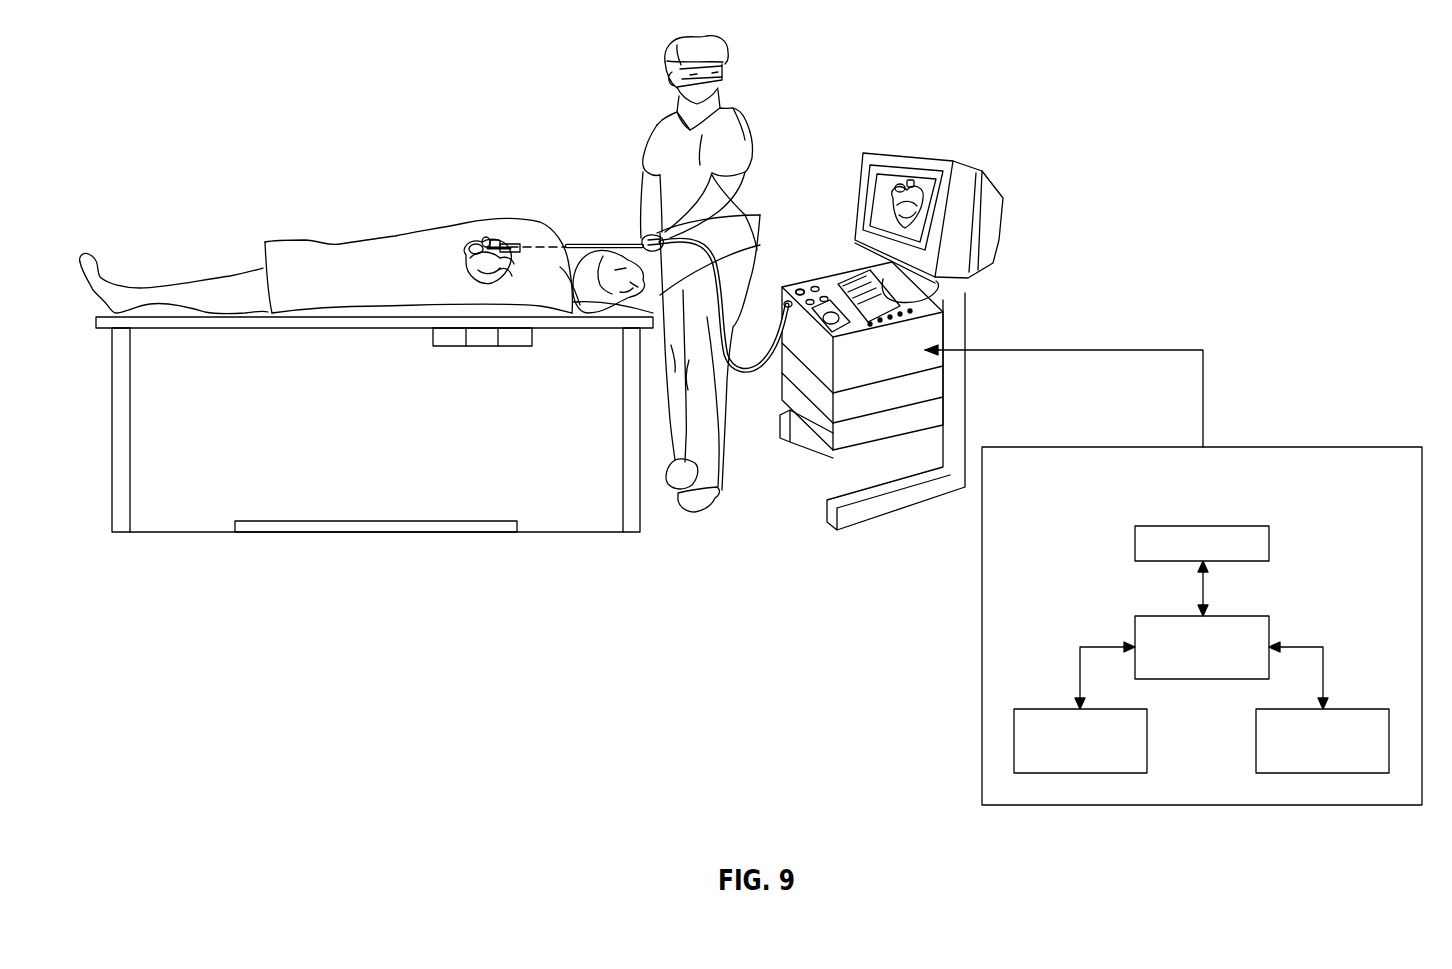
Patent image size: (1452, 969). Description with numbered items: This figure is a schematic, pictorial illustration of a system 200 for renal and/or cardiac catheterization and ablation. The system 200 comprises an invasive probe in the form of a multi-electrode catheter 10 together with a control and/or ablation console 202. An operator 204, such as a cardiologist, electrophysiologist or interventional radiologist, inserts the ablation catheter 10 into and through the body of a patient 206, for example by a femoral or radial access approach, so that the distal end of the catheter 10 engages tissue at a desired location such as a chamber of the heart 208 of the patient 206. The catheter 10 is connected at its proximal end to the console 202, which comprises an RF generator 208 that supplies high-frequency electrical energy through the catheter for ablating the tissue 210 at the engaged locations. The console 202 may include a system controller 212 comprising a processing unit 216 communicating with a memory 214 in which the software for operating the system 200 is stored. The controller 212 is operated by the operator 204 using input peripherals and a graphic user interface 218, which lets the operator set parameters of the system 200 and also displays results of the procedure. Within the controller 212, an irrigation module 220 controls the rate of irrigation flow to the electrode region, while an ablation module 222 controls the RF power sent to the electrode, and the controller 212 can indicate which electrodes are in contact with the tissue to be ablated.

The system 200 is at (196, 110).
The multi-electrode catheter 10 is at (718, 232).
The control and/or ablation console 202 is at (800, 289).
The operator 204 is at (662, 122).
The patient 206 is at (727, 255).
The RF generator 208 is at (488, 240).
The tissue 210 is at (457, 270).
The system controller 212 is at (1361, 447).
The memory 214 is at (1164, 616).
The processing unit 216 is at (1200, 525).
The graphic user interface 218 is at (888, 155).
The irrigation module 220 is at (1355, 709).
The ablation module 222 is at (1058, 709).